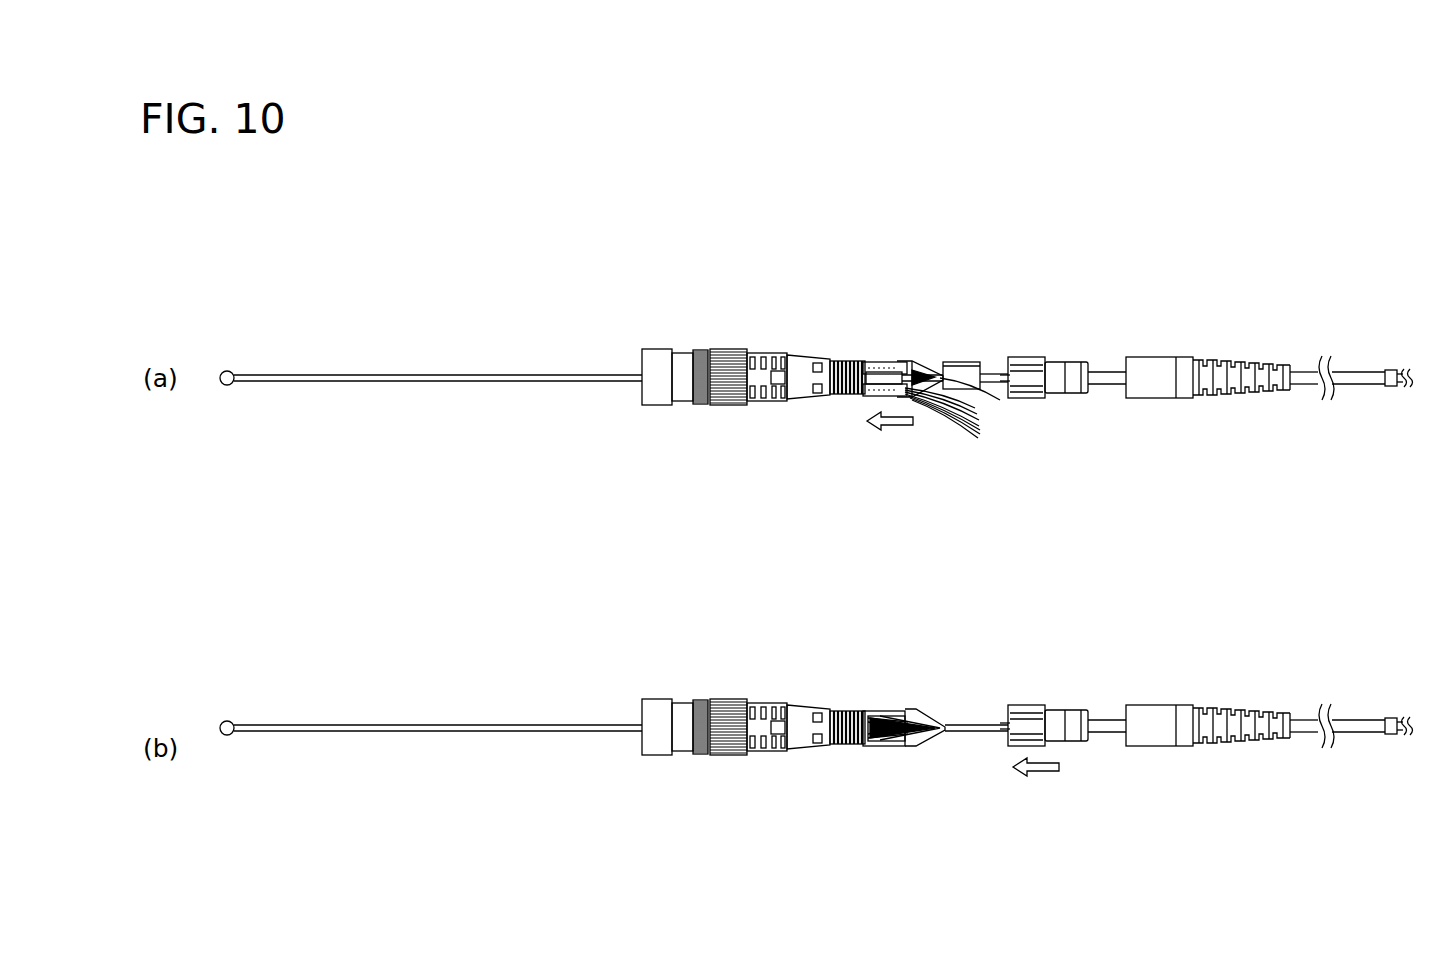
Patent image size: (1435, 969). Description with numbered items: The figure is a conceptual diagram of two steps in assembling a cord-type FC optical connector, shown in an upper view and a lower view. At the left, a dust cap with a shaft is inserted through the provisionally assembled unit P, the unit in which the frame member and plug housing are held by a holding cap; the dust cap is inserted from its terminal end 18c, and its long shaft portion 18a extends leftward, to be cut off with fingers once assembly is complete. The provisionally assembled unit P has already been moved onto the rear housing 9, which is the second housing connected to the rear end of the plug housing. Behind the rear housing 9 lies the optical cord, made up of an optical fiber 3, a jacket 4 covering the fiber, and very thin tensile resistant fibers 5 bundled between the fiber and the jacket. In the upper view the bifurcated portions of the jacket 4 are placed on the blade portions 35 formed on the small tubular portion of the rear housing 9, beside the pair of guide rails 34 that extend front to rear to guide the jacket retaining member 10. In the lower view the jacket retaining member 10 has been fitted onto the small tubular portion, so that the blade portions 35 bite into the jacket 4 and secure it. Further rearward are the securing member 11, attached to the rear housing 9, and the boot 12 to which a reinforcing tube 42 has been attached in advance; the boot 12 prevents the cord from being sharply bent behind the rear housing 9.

The terminal end 18c is at (227, 371).
The shaft portion 18a is at (423, 374).
The provisionally assembled unit P is at (696, 349).
The rear housing 9 is at (804, 350).
The blade portions 35 is at (889, 352).
The guide rails 34 is at (867, 402).
The optical fiber 3 is at (920, 402).
The jacket 4 is at (916, 352).
The tensile resistant fibers 5 is at (978, 422).
The jacket retaining member 10 is at (980, 351).
The securing member 11 is at (1031, 352).
The boot 12 is at (1157, 362).
The reinforcing tube 42 is at (1349, 372).